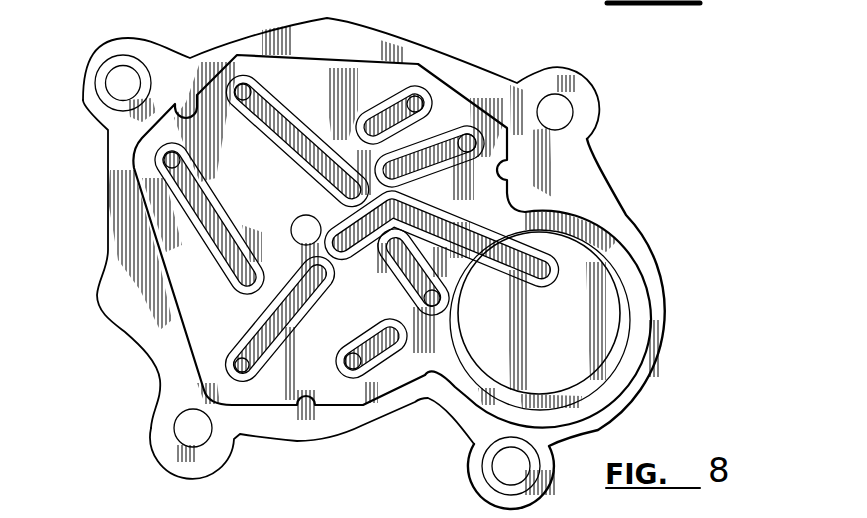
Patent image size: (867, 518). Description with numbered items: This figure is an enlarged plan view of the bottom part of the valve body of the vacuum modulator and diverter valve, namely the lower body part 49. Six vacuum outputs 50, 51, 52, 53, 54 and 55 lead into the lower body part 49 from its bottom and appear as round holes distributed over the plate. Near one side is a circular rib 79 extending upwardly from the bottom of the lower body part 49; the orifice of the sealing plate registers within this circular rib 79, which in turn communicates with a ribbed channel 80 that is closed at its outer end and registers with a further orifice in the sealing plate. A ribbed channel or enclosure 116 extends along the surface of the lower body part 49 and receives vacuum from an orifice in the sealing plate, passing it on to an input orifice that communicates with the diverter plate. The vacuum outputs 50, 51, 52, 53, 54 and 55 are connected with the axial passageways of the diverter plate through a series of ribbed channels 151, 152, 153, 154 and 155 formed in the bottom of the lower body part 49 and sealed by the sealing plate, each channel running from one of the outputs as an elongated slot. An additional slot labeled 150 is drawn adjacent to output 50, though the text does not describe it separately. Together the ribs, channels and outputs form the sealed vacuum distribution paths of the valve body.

The lower body part 49 is at (123, 238).
The vacuum output 50 is at (361, 370).
The vacuum output 51 is at (247, 373).
The vacuum output 52 is at (164, 160).
The vacuum output 53 is at (244, 84).
The vacuum output 54 is at (416, 96).
The vacuum output 55 is at (441, 300).
The circular rib 79 is at (623, 327).
The ribbed channel 80 is at (428, 217).
The ribbed channel or enclosure 116 is at (440, 153).
The slot 150 is at (347, 350).
The ribbed channel 151 is at (284, 317).
The ribbed channel 152 is at (223, 235).
The ribbed channel 153 is at (275, 122).
The ribbed channel 154 is at (394, 128).
The ribbed channel 155 is at (403, 267).